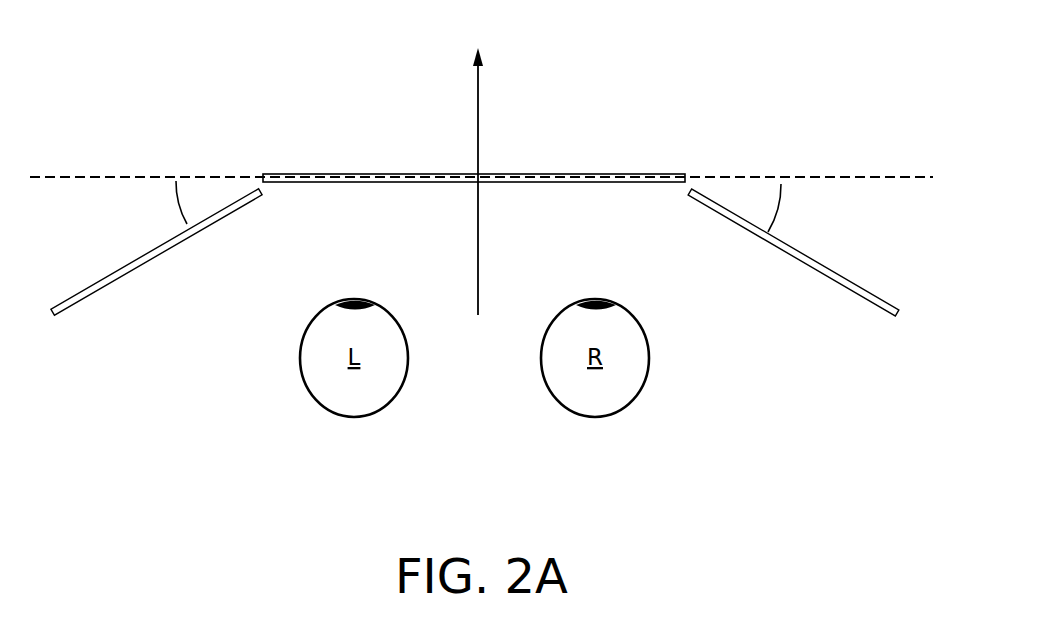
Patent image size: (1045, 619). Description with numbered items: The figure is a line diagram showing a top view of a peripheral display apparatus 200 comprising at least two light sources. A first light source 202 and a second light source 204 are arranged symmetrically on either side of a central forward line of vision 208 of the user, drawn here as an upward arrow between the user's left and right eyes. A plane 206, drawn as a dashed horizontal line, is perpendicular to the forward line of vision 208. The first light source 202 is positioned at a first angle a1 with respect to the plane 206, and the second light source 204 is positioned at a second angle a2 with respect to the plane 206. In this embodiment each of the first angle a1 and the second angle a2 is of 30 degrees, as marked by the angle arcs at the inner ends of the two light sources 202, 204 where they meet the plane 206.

The peripheral display apparatus 200 is at (861, 61).
The first light source 202 is at (113, 282).
The second light source 204 is at (842, 292).
The plane 206 is at (835, 177).
The forward line of vision 208 is at (474, 181).
The first angle a1 is at (208, 193).
The second angle a2 is at (735, 197).
The 30 degrees 30 is at (478, 207).